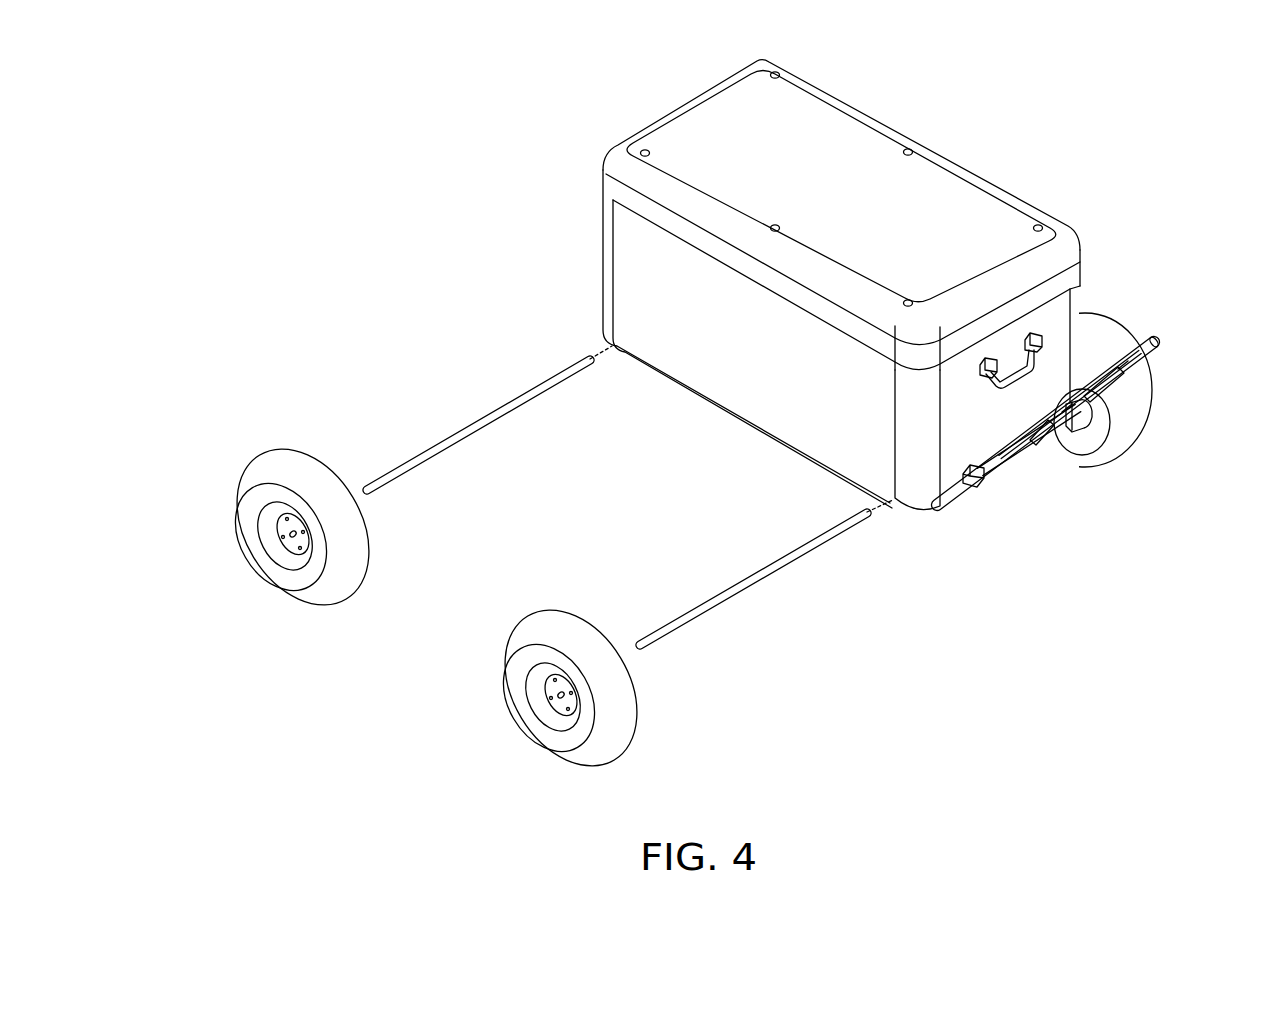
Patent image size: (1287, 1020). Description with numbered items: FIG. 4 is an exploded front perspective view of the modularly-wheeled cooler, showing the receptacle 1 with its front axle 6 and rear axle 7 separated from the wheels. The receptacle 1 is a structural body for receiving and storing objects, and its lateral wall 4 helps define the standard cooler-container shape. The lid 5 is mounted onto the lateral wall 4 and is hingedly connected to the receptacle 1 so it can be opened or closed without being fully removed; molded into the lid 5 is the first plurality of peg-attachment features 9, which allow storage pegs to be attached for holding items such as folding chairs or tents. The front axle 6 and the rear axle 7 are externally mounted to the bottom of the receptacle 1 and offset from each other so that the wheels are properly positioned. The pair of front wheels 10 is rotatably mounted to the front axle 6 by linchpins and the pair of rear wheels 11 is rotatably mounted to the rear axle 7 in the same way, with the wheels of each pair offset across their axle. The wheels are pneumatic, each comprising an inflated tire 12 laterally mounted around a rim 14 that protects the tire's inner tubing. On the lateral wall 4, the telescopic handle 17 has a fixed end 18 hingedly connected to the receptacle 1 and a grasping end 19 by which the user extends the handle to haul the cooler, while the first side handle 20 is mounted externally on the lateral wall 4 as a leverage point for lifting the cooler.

The receptacle 1 is at (1095, 166).
The lateral wall 4 is at (606, 228).
The lid 5 is at (1076, 270).
The front axle 6 is at (763, 580).
The rear axle 7 is at (484, 423).
The first plurality of peg-attachment features 9 is at (773, 78).
The pair of front wheels 10 is at (708, 553).
The pair of rear wheels 11 is at (699, 553).
The inflated tire 12 is at (253, 473).
The rim 14 is at (258, 543).
The telescopic handle 17 is at (1071, 487).
The fixed end 18 is at (985, 480).
The grasping end 19 is at (1156, 344).
The first side handle 20 is at (1004, 379).